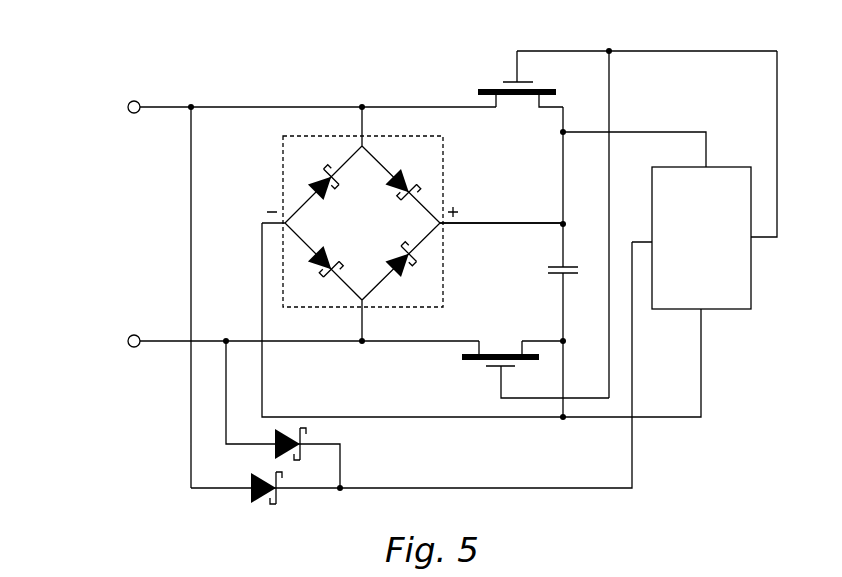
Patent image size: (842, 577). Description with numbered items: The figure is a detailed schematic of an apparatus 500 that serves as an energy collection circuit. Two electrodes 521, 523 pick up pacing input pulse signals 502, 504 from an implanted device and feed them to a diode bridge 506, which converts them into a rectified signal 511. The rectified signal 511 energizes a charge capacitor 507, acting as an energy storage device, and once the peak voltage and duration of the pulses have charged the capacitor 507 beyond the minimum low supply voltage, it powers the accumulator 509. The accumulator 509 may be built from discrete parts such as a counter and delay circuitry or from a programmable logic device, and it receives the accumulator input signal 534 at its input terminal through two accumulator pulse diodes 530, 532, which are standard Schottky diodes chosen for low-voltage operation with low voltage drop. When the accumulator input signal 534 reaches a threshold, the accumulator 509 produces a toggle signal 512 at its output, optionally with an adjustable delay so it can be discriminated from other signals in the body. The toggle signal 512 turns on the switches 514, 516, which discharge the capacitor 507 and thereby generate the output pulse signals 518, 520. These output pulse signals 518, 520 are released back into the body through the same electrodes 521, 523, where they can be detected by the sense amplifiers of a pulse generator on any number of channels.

The apparatus 500 is at (90, 40).
The input pulse signal 502 is at (161, 105).
The input pulse signal 504 is at (165, 340).
The electrode 521 is at (134, 116).
The electrode 523 is at (134, 350).
The diode bridge 506 is at (282, 146).
The rectified signal 511 is at (510, 222).
The charge capacitor 507 is at (556, 265).
The switch 514 is at (518, 97).
The switch 516 is at (500, 353).
The output pulse signal 518 is at (440, 106).
The output pulse signal 520 is at (413, 342).
The toggle signal 512 is at (777, 99).
The accumulator 509 is at (736, 310).
The accumulator pulse diode 530 is at (302, 443).
The accumulator pulse diode 532 is at (250, 495).
The accumulator input signal 534 is at (632, 462).